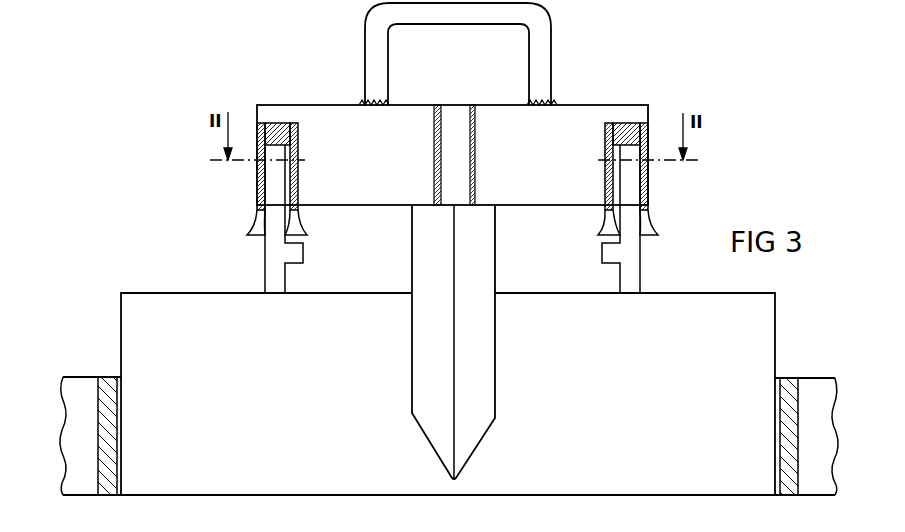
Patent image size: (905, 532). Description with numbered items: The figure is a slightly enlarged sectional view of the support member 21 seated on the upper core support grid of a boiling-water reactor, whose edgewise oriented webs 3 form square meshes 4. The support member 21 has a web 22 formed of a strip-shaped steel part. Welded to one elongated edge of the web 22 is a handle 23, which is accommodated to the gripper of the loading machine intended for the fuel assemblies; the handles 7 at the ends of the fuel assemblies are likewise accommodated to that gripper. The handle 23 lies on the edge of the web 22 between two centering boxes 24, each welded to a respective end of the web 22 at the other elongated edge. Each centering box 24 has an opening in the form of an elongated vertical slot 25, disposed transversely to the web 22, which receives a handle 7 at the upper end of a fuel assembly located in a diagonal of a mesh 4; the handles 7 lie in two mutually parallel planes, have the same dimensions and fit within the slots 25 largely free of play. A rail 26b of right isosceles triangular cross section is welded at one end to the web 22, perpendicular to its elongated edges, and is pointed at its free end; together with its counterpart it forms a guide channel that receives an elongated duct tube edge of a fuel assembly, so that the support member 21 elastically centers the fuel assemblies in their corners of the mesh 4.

The web 3 is at (104, 386).
The mesh 4 is at (777, 378).
The handle 7 is at (300, 255).
The support member 21 is at (457, 148).
The web 22 is at (338, 128).
The handle 23 is at (547, 33).
The centering box 24 is at (258, 190).
The slot 25 is at (252, 238).
The rail 26b is at (420, 418).